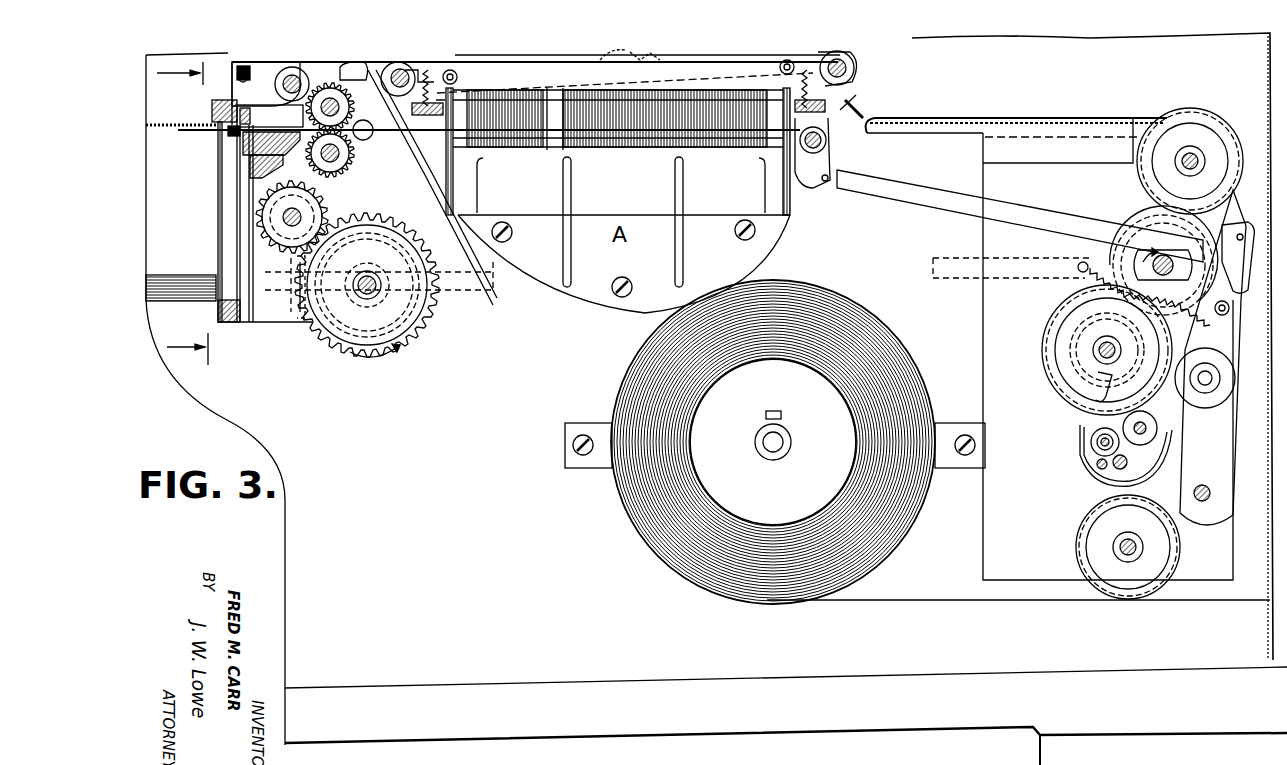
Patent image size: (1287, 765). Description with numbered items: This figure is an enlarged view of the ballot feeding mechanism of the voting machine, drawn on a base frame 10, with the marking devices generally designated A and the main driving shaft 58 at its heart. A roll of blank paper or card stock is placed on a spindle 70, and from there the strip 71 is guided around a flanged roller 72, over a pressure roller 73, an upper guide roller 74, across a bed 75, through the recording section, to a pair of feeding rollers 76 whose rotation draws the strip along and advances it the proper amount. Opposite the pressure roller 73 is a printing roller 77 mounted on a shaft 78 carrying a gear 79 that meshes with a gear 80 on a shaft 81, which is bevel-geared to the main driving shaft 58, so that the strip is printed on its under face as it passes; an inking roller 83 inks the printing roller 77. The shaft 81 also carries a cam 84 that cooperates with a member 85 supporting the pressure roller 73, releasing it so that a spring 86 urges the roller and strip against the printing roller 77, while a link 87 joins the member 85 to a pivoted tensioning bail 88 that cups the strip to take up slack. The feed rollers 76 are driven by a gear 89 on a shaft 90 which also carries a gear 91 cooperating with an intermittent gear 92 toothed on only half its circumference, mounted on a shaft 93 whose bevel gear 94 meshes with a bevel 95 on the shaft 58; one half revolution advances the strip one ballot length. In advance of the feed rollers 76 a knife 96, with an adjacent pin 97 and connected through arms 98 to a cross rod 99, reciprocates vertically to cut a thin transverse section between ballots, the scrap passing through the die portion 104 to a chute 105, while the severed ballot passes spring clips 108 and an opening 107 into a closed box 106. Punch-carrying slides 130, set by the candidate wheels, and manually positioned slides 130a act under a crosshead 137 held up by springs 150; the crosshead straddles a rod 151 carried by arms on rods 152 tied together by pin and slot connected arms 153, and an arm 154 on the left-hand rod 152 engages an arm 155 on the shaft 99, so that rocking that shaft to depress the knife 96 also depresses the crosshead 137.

The base frame 10 is at (667, 692).
The main driving shaft 58 is at (496, 296).
The spindle 70 is at (756, 445).
The strip 71 is at (868, 118).
The flanged roller 72 is at (1156, 584).
The pressure roller 73 is at (1232, 366).
The upper guide roller 74 is at (1188, 110).
The bed 75 is at (1072, 118).
The feeding rollers 76 is at (348, 150).
The printing roller 77 is at (1086, 350).
The shaft 78 is at (1100, 354).
The gear 79 is at (1078, 324).
The gear 80 is at (1138, 208).
The shaft 81 is at (1141, 242).
The inking roller 83 is at (1130, 428).
The cam 84 is at (1241, 226).
The member 85 is at (1230, 310).
The spring 86 is at (1106, 264).
The link 87 is at (952, 200).
The tensioning bail 88 is at (860, 102).
The gear 89 is at (281, 223).
The shaft 90 is at (283, 217).
The gear 91 is at (283, 246).
The intermittent gear 92 is at (360, 338).
The shaft 93 is at (372, 309).
The bevel gear 94 is at (391, 362).
The bevel 95 is at (312, 326).
The knife 96 is at (252, 118).
The pin 97 is at (244, 70).
The arms 98 is at (268, 76).
The cross rod 99 is at (298, 80).
The die portion 104 is at (262, 150).
The chute 105 is at (250, 326).
The box 106 is at (160, 266).
The opening 107 is at (228, 136).
The spring clips 108 is at (213, 108).
The slides 130 is at (760, 100).
The slides 130a is at (532, 112).
The crosshead 137 is at (563, 66).
The springs 150 is at (452, 72).
The rod 151 is at (457, 73).
The rods 152 is at (404, 72).
The arms 153 is at (622, 62).
The arm 154 is at (366, 66).
The arm 155 is at (408, 132).